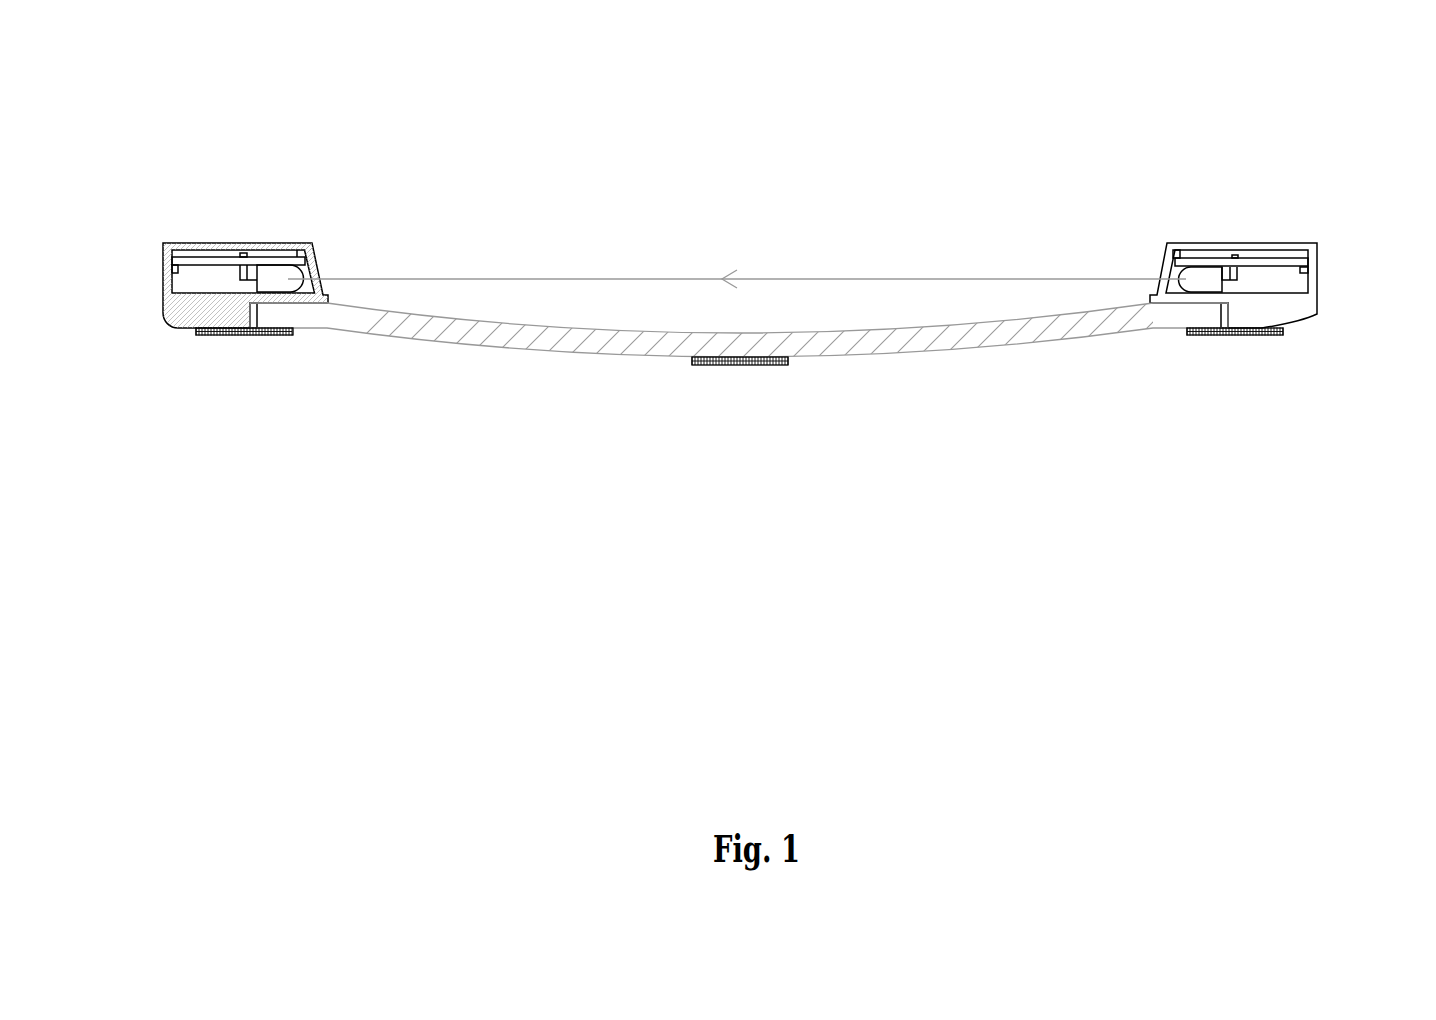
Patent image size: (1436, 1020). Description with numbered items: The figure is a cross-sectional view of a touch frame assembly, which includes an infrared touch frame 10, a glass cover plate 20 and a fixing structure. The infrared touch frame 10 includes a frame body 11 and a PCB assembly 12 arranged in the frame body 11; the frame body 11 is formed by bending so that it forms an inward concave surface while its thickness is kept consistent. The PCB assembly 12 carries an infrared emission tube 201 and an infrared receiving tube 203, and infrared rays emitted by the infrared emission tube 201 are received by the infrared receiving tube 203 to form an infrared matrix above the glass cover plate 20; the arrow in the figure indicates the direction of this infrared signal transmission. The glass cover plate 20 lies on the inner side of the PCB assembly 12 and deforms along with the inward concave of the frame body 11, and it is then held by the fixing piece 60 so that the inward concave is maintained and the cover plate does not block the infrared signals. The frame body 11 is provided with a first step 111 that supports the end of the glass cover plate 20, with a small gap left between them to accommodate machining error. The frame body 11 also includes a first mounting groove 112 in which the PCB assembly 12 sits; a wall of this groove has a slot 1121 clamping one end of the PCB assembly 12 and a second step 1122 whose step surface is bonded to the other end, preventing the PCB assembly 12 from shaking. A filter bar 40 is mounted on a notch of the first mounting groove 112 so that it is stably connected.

The infrared touch frame 10 is at (1317, 316).
The frame body 11 is at (1253, 313).
The first step 111 is at (255, 322).
The first mounting groove 112 is at (1270, 280).
The slot 1121 is at (163, 245).
The second step 1122 is at (313, 245).
The PCB assembly 12 is at (211, 262).
The glass cover plate 20 is at (927, 340).
The infrared emission tube 201 is at (1198, 280).
The infrared receiving tube 203 is at (271, 280).
The filter bar 40 is at (1165, 277).
The fixing piece 60 is at (197, 335).